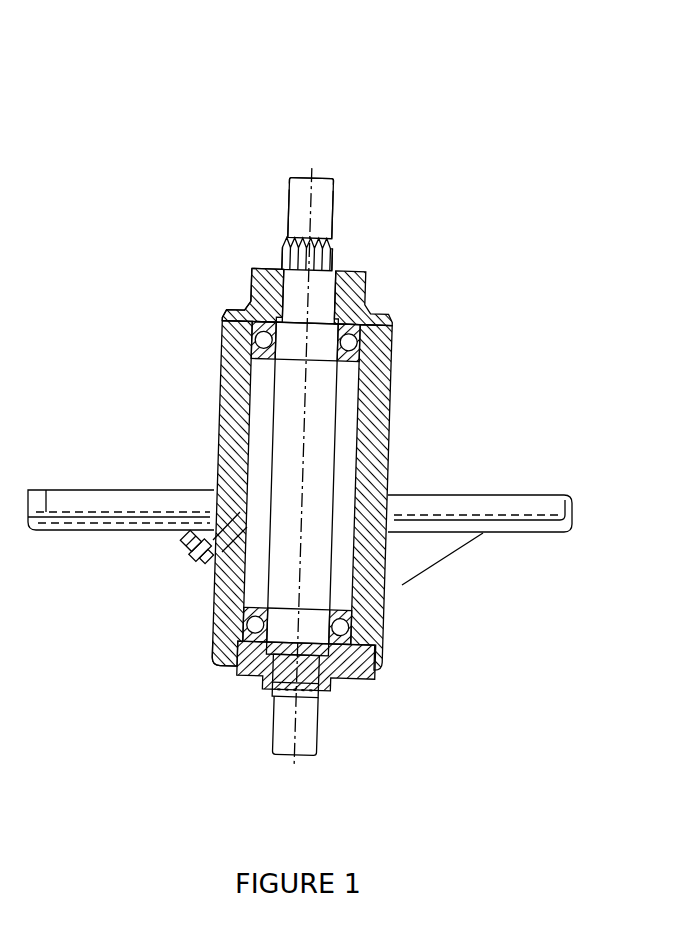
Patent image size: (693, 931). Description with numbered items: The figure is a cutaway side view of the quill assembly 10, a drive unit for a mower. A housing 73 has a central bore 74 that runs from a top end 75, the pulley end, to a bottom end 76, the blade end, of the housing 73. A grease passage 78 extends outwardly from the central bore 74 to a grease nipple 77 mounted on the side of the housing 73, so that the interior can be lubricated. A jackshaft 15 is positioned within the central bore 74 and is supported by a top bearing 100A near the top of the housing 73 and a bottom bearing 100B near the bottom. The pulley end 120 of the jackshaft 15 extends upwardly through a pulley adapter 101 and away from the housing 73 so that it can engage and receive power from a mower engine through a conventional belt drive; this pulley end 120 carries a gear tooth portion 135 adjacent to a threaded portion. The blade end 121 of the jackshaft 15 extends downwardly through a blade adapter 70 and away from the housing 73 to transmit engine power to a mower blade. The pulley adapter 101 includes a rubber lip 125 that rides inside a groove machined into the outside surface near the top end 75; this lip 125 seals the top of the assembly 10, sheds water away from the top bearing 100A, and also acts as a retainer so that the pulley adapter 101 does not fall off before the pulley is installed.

The quill assembly 10 is at (487, 790).
The jackshaft 15 is at (386, 140).
The blade adapter 70 is at (235, 675).
The housing 73 is at (394, 408).
The central bore 74 is at (300, 505).
The top end 75 is at (260, 268).
The bottom end 76 is at (353, 686).
The grease nipple 77 is at (134, 626).
The grease passage 78 is at (232, 513).
The top bearing 100A is at (458, 283).
The bottom bearing 100B is at (394, 689).
The pulley adapter 101 is at (243, 215).
The pulley end 120 is at (300, 162).
The blade end 121 is at (322, 768).
The rubber lip 125 is at (217, 335).
The gear tooth portion 135 is at (337, 253).